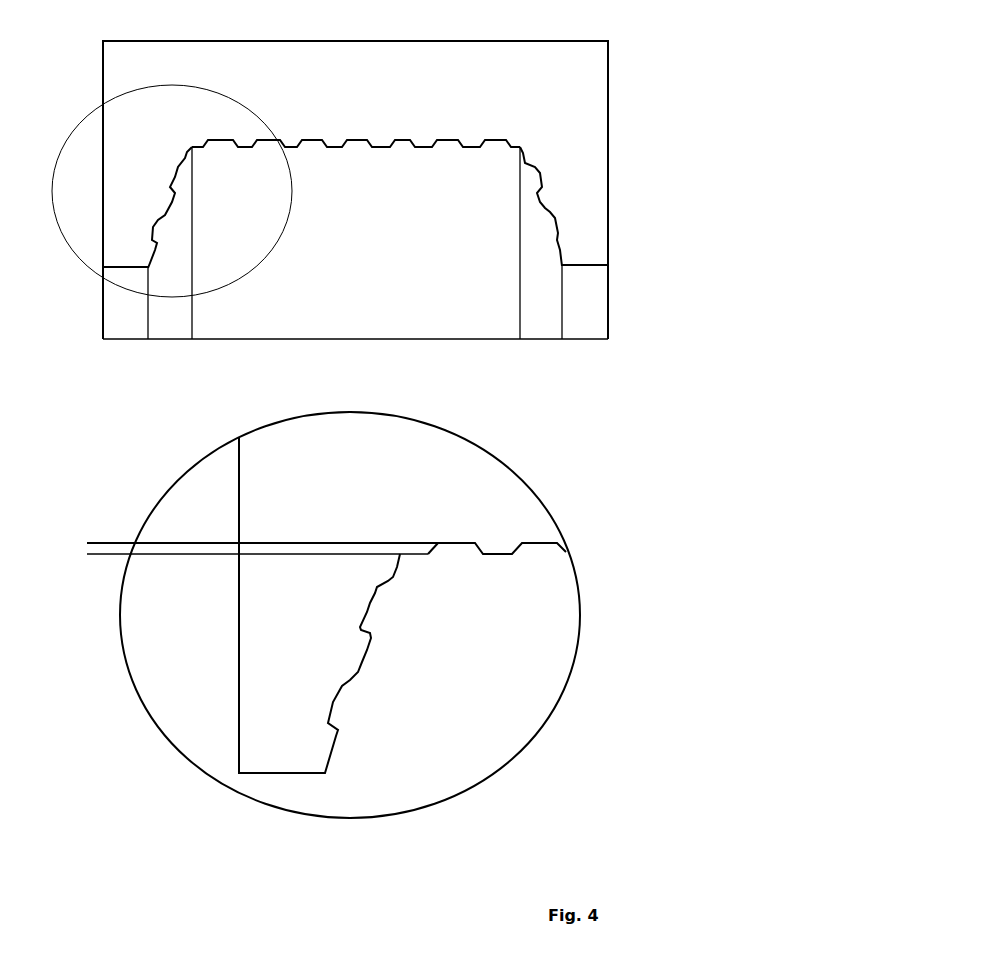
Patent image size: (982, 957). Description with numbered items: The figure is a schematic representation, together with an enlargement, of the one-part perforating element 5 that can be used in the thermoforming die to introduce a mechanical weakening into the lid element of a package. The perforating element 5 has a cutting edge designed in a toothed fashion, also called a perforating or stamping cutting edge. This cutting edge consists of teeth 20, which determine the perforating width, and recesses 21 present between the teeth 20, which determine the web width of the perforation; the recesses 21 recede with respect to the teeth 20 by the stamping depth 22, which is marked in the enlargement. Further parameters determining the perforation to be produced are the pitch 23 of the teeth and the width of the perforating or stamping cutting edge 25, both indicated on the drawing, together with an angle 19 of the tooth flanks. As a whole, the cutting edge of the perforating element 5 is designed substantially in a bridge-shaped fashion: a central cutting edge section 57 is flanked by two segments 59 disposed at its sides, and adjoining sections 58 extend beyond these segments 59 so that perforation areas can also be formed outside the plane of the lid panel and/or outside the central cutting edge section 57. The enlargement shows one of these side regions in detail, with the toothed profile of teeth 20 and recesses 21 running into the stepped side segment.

The perforating element 5 is at (560, 97).
The flank angle 19 is at (482, 148).
The teeth 20 is at (420, 147).
The recesses 21 is at (395, 140).
The stamping depth 22 is at (85, 570).
The pitch 23 is at (358, 140).
The width of the perforating or stamping cutting edge 25 is at (578, 273).
The central cutting edge section 57 is at (355, 243).
The adjoining sections 58 is at (355, 302).
The segments 59 is at (355, 302).